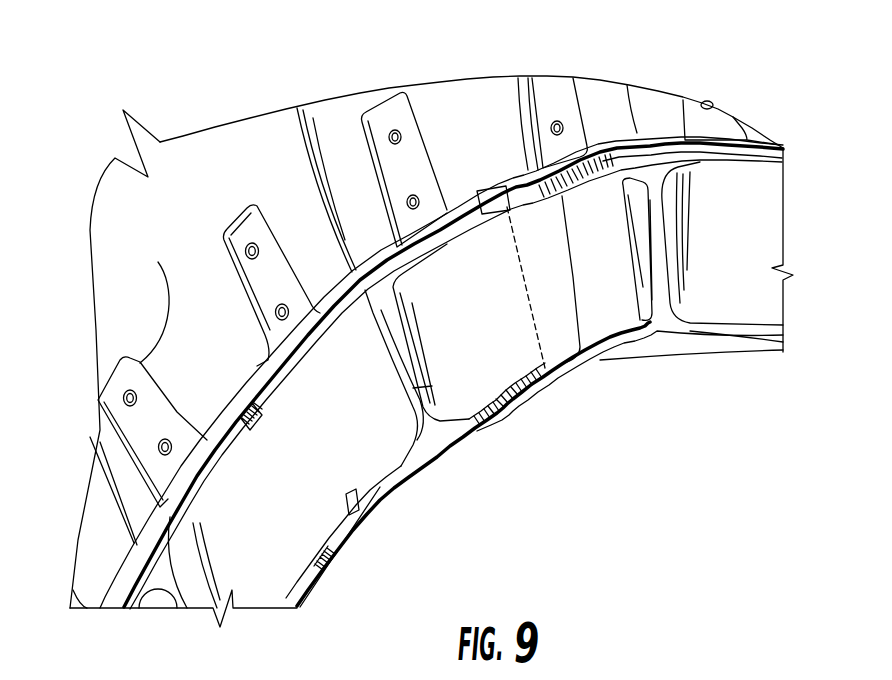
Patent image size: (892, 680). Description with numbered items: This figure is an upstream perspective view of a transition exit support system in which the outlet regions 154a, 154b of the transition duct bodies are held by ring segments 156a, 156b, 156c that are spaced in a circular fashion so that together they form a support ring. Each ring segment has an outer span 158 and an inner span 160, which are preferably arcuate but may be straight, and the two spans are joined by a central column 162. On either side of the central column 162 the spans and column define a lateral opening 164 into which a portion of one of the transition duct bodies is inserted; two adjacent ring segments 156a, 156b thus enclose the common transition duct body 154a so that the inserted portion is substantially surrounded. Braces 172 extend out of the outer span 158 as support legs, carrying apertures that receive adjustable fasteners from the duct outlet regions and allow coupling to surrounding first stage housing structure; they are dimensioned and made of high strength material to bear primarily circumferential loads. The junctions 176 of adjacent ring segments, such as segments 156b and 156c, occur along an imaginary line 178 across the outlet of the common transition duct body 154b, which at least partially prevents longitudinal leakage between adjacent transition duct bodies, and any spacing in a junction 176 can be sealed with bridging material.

The outlet region of transition duct body 154a is at (471, 123).
The outlet region of transition duct body 154b is at (213, 358).
The ring segment 156a is at (735, 296).
The ring segment 156b is at (540, 464).
The ring segment 156c is at (253, 611).
The outer span 158 is at (441, 373).
The inner span 160 is at (344, 483).
The central column 162 is at (455, 357).
The lateral opening 164 is at (534, 384).
The brace 172 is at (439, 253).
The junction 176 is at (414, 365).
The imaginary line 178 is at (506, 277).